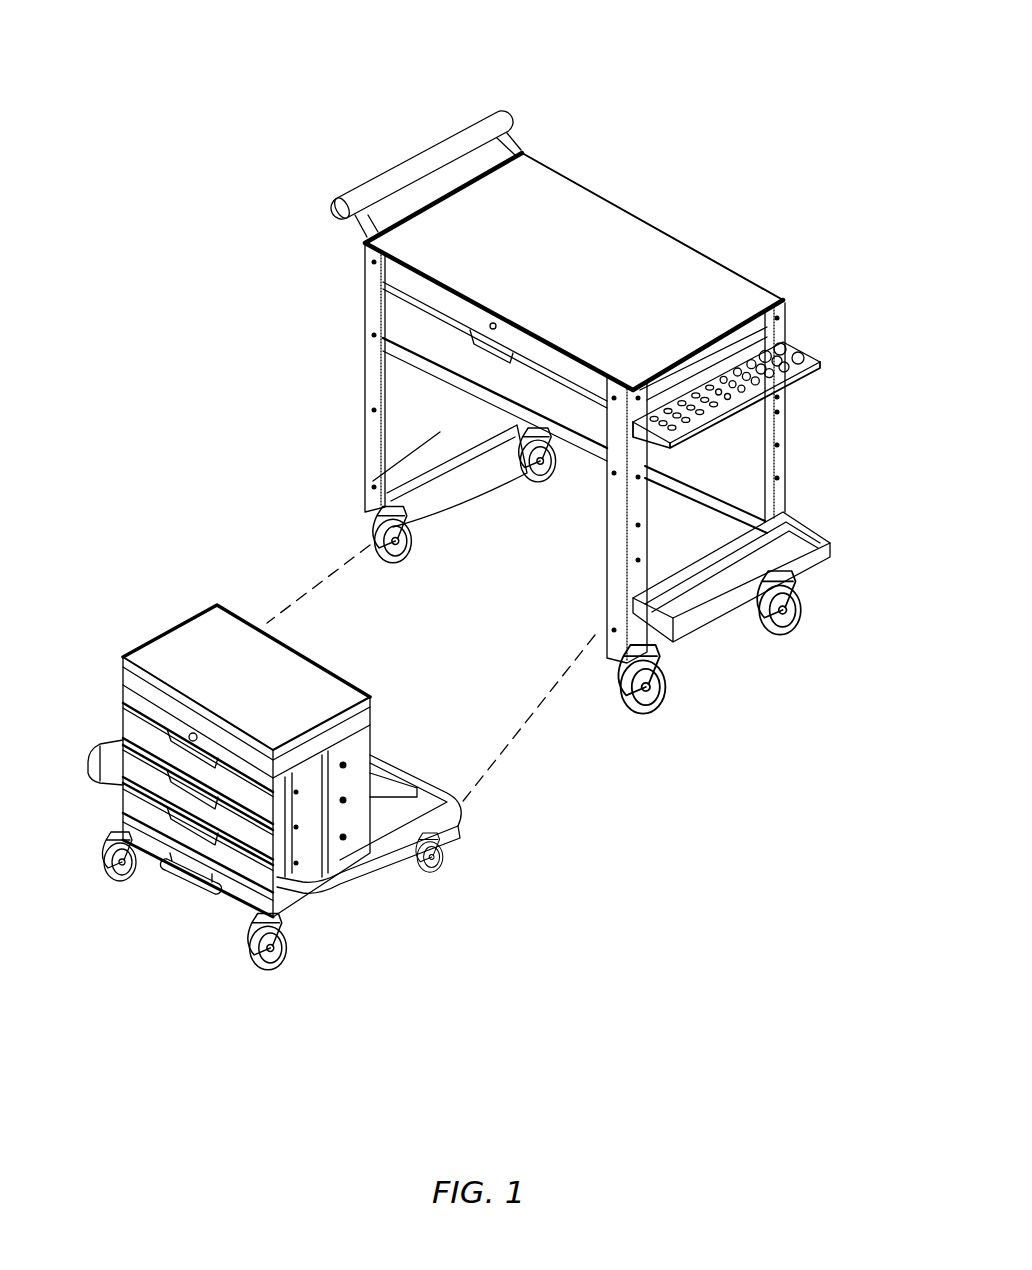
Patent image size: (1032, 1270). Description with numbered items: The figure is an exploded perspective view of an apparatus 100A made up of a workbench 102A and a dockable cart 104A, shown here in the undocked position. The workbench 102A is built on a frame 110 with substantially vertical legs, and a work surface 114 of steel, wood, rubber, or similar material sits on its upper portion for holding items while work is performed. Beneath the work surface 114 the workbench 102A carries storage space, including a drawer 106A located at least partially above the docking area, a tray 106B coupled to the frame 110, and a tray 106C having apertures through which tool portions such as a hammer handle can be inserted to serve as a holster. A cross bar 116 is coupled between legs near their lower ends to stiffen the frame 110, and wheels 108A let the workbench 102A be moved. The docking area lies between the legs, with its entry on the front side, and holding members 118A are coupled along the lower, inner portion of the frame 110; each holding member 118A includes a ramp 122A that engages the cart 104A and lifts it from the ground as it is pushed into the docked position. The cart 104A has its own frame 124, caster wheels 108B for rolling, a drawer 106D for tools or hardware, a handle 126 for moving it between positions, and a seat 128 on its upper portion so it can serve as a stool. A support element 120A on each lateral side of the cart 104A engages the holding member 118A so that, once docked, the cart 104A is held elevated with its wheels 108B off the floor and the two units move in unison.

The apparatus 100A is at (738, 59).
The workbench 102A is at (551, 168).
The cart 104A is at (212, 604).
The drawer 106A is at (395, 308).
The tray 106B is at (802, 531).
The tray 106C is at (815, 352).
The drawer 106D is at (133, 735).
The wheels 108A is at (800, 625).
The wheels 108B is at (275, 967).
The frame 110 is at (366, 440).
The work surface 114 is at (661, 262).
The cross bar 116 is at (692, 498).
The holding member 118A is at (480, 477).
The support element 120A is at (390, 873).
The ramp 122A is at (420, 508).
The frame 124 is at (350, 740).
The handle 126 is at (190, 887).
The seat 128 is at (300, 673).